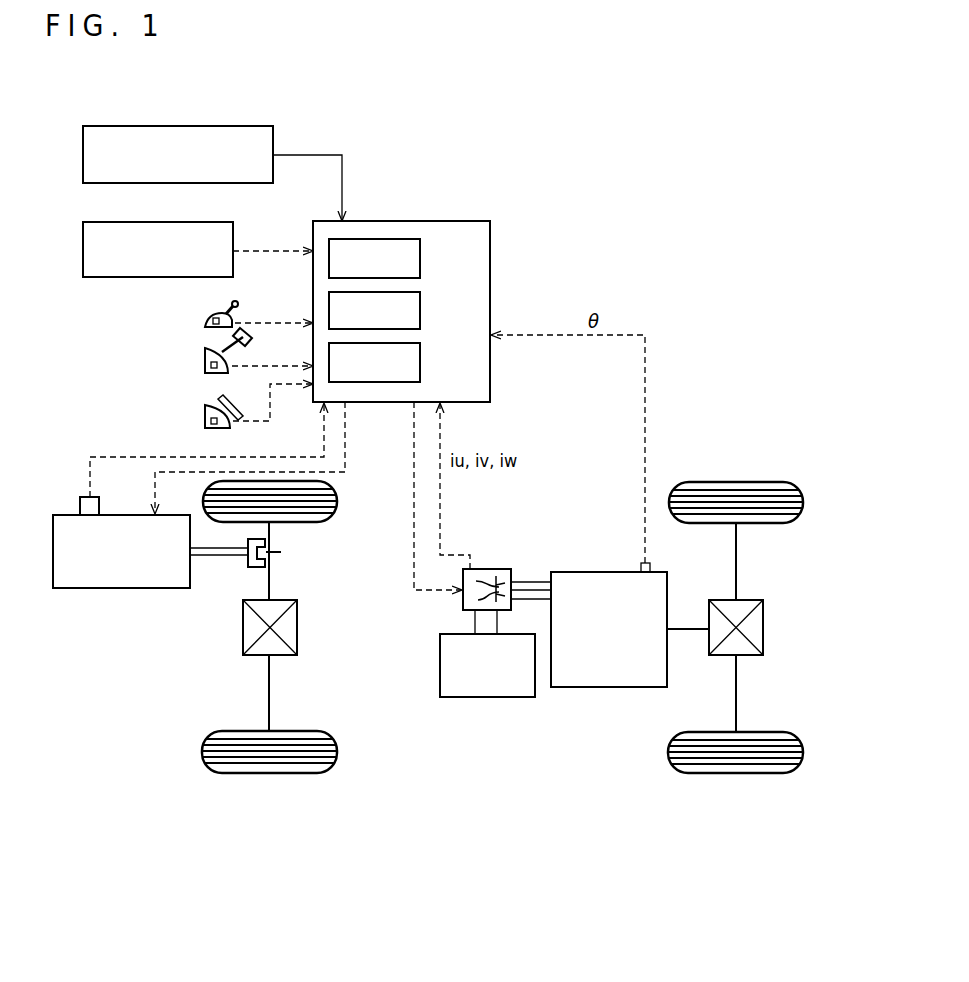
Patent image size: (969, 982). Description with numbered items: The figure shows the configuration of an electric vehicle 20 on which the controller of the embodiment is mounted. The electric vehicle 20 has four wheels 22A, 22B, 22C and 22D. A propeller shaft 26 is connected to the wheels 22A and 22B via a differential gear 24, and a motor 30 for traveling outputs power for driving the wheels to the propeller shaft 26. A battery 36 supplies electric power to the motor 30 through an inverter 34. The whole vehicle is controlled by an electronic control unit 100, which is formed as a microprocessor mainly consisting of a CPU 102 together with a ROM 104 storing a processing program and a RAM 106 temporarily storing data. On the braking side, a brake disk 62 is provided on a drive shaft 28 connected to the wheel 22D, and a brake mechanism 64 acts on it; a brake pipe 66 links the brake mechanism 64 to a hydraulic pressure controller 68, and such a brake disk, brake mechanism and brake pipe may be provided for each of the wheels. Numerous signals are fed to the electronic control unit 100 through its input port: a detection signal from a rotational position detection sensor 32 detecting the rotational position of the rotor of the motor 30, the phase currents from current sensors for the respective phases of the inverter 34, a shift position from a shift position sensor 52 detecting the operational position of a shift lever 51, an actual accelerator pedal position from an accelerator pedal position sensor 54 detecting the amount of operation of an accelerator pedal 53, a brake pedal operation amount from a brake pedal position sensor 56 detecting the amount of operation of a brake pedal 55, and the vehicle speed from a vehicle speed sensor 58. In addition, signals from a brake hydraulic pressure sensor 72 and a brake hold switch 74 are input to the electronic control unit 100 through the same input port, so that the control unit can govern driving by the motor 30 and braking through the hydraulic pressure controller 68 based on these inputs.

The electric vehicle 20 is at (549, 265).
The wheel 22A is at (745, 773).
The wheel 22B is at (748, 482).
The wheel 22C is at (335, 757).
The wheel 22D is at (335, 505).
The differential gear 24 is at (752, 600).
The propeller shaft 26 is at (688, 632).
The drive shaft 28 is at (272, 577).
The motor 30 is at (571, 572).
The rotational position detection sensor 32 is at (641, 563).
The inverter 34 is at (493, 569).
The battery 36 is at (440, 668).
The shift lever 51 is at (228, 309).
The shift position sensor 52 is at (206, 322).
The accelerator pedal 53 is at (225, 352).
The accelerator pedal position sensor 54 is at (205, 366).
The brake pedal 55 is at (221, 403).
The brake pedal position sensor 56 is at (205, 415).
The vehicle speed sensor 58 is at (116, 222).
The brake disk 62 is at (279, 553).
The brake mechanism 64 is at (241, 567).
The brake pipe 66 is at (216, 556).
The hydraulic pressure controller 68 is at (100, 588).
The brake hydraulic pressure sensor 72 is at (85, 497).
The brake hold switch 74 is at (122, 126).
The electronic control unit 100 is at (401, 285).
The CPU 102 is at (420, 258).
The ROM 104 is at (420, 310).
The RAM 106 is at (420, 362).